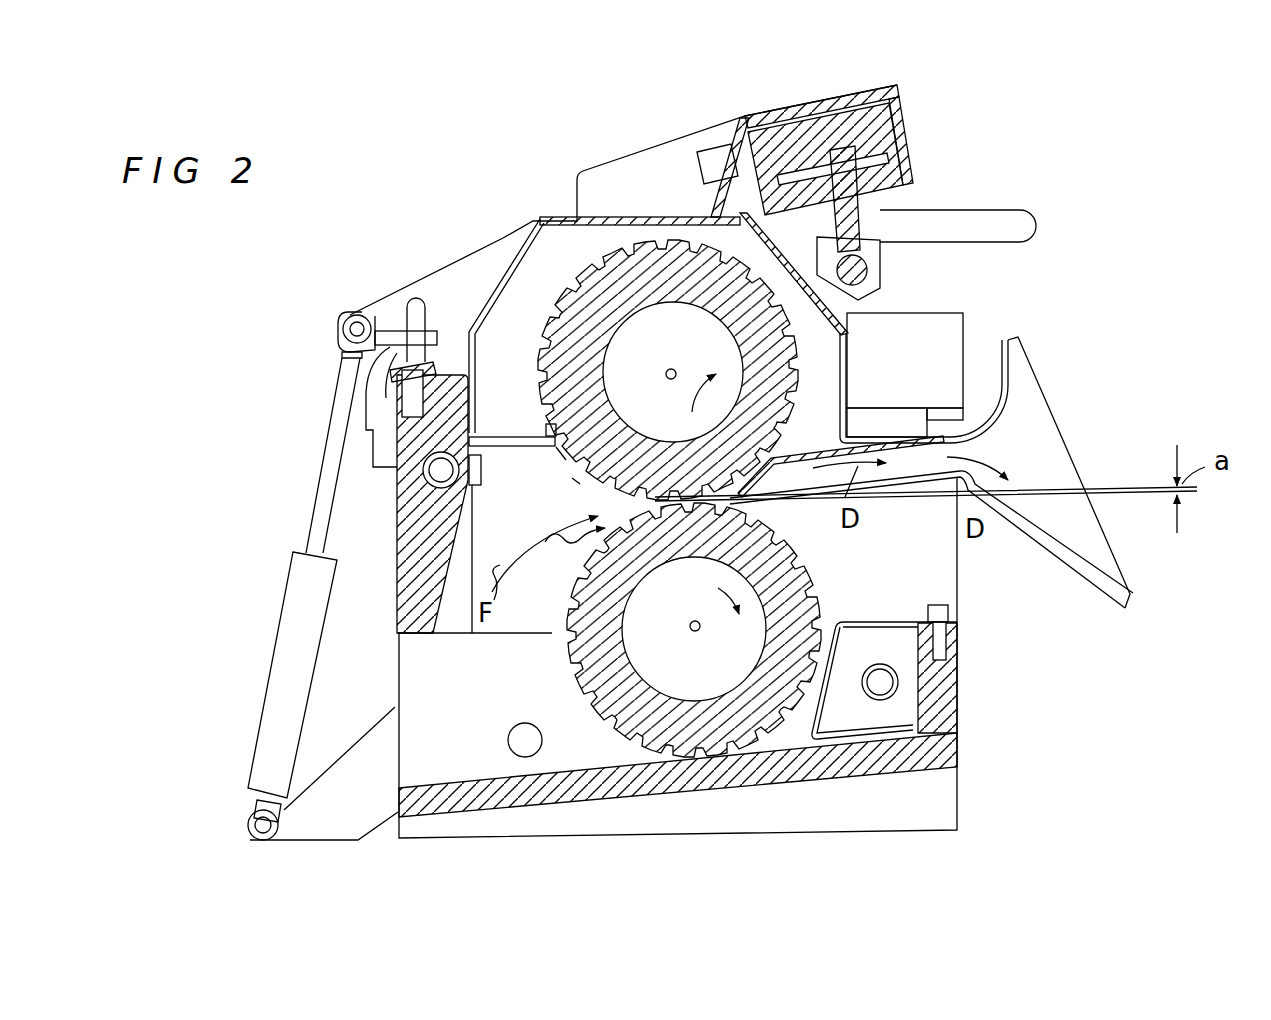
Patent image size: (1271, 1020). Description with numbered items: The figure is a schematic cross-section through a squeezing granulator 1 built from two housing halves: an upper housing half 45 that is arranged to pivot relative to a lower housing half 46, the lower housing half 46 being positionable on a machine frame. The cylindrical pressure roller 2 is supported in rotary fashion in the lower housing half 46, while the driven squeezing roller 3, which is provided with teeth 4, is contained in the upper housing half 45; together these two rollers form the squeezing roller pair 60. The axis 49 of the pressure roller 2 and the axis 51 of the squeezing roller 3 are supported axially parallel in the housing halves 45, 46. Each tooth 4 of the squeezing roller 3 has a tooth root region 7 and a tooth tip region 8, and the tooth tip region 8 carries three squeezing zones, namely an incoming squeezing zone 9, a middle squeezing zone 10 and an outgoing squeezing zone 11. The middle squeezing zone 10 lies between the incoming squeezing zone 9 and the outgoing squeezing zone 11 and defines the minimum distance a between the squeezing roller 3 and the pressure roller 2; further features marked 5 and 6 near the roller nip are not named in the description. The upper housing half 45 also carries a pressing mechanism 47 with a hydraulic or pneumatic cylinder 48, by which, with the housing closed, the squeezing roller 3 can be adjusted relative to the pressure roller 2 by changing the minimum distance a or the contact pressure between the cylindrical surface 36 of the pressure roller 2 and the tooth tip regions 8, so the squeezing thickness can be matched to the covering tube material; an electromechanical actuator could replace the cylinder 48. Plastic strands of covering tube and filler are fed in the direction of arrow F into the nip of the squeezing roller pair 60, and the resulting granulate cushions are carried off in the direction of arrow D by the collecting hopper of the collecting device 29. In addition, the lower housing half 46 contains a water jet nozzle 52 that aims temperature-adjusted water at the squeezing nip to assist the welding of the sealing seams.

The squeezing granulator 1 is at (1100, 197).
The pressure roller 2 is at (823, 592).
The squeezing roller 3 is at (565, 312).
The teeth 4 is at (536, 372).
The lower guide plate 5 is at (610, 486).
The roller lower edge 6 is at (573, 472).
The tooth root region 7 is at (797, 366).
The tooth tip region 8 is at (793, 420).
The incoming squeezing zone 9 is at (560, 450).
The middle squeezing zone 10 is at (546, 433).
The outgoing squeezing zone 11 is at (546, 428).
The collecting device 29 is at (1050, 405).
The cylindrical surface 36 is at (553, 668).
The upper housing half 45 is at (513, 270).
The lower housing half 46 is at (898, 772).
The pressing mechanism 47 is at (906, 106).
The hydraulic or pneumatic cylinder 48 is at (914, 160).
The axis of the pressure roller 49 is at (697, 633).
The axis of the squeezing roller 51 is at (664, 375).
The water jet nozzle 52 is at (482, 490).
The squeezing roller pair 60 is at (548, 554).